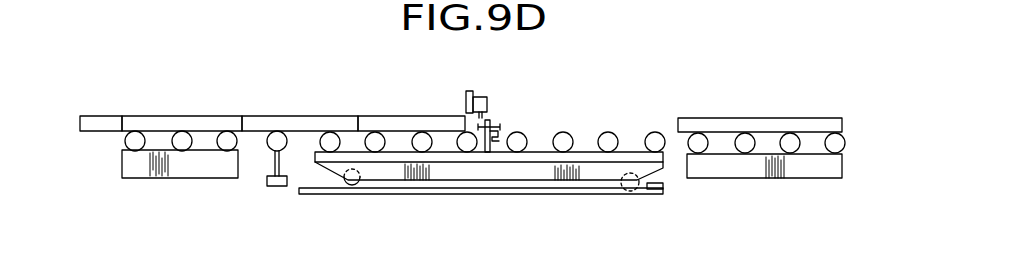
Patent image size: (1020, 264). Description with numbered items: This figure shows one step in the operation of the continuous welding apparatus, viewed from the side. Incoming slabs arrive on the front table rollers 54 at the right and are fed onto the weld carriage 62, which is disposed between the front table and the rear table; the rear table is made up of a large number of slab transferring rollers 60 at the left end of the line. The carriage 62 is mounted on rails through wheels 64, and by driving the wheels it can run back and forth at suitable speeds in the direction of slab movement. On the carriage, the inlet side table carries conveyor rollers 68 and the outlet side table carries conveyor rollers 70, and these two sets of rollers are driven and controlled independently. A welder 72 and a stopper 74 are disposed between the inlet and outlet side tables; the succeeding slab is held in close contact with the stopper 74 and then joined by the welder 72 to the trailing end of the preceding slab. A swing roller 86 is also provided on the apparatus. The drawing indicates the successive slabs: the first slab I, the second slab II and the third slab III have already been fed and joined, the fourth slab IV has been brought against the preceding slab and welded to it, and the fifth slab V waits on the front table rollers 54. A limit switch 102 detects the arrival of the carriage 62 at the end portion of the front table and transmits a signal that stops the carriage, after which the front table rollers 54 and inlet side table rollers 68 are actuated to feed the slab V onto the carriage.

The first slab I is at (101, 117).
The second slab II is at (170, 117).
The third slab III is at (280, 74).
The fourth slab IV is at (397, 130).
The fifth slab V is at (770, 122).
The front table rollers 54 is at (745, 152).
The slab transferring rollers 60 is at (183, 143).
The weld carriage 62 is at (505, 170).
The wheels 64 is at (625, 187).
The conveyor rollers 68 is at (652, 136).
The conveyor rollers 70 is at (330, 138).
The welder 72 is at (487, 103).
The stopper 74 is at (493, 120).
The swing roller 86 is at (272, 134).
The limit switch 102 is at (655, 196).